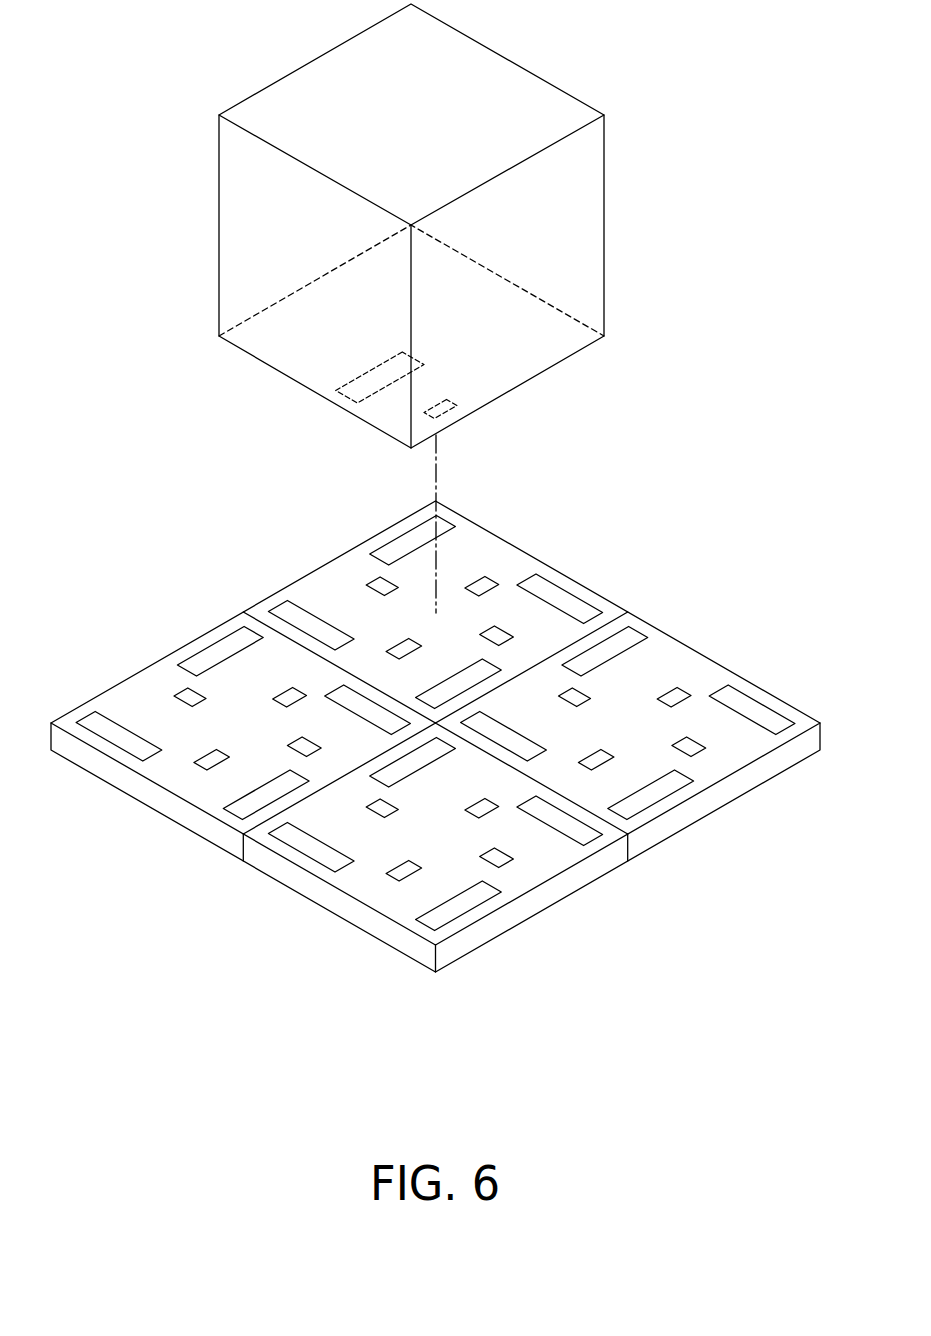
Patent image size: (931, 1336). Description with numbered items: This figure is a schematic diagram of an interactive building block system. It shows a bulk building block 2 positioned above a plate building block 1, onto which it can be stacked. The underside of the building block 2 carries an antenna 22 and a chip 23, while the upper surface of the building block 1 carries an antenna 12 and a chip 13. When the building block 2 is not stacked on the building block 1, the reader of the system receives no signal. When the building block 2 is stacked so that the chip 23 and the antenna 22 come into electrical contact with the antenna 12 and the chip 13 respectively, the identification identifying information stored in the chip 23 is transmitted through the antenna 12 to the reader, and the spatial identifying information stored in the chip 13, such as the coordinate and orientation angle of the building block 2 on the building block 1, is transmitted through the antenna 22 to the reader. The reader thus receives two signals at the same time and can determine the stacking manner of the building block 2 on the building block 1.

The building block 1 is at (708, 656).
The building block 2 is at (582, 90).
The antenna 12 is at (475, 678).
The chip 13 is at (403, 650).
The antenna 22 is at (352, 392).
The chip 23 is at (430, 417).